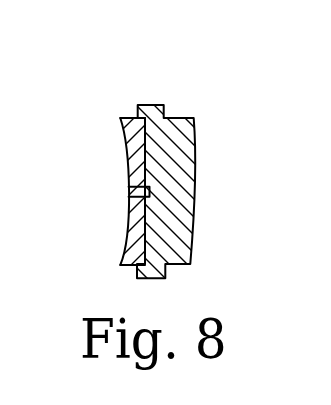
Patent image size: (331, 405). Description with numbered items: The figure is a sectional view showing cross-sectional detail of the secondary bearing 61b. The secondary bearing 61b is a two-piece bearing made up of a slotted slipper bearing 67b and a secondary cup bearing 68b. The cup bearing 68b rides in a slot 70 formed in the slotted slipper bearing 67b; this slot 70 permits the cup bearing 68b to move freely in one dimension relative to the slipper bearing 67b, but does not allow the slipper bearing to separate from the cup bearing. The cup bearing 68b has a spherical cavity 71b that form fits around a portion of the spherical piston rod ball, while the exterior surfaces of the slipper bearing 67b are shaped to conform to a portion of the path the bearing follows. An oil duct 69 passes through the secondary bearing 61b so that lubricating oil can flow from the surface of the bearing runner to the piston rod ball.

The secondary bearing 61b is at (184, 97).
The slotted slipper bearing 67b is at (182, 266).
The secondary cup bearing 68b is at (122, 266).
The oil duct 69 is at (129, 192).
The slot 70 is at (127, 218).
The spherical cavity 71b is at (127, 164).